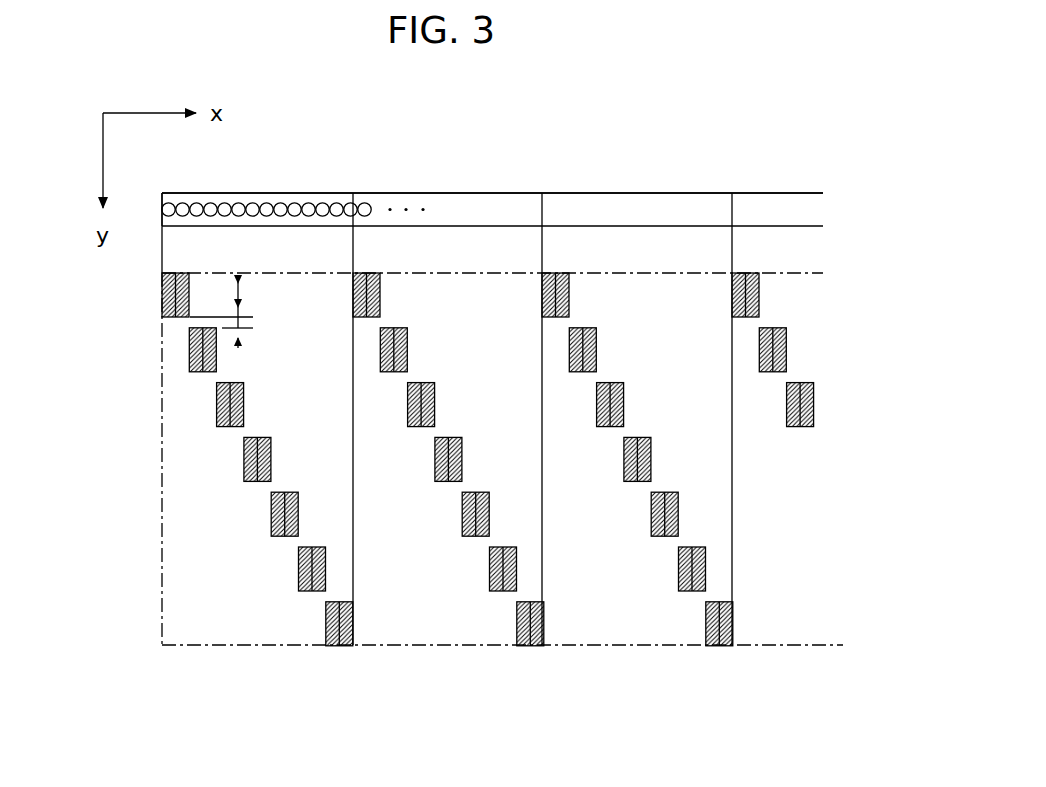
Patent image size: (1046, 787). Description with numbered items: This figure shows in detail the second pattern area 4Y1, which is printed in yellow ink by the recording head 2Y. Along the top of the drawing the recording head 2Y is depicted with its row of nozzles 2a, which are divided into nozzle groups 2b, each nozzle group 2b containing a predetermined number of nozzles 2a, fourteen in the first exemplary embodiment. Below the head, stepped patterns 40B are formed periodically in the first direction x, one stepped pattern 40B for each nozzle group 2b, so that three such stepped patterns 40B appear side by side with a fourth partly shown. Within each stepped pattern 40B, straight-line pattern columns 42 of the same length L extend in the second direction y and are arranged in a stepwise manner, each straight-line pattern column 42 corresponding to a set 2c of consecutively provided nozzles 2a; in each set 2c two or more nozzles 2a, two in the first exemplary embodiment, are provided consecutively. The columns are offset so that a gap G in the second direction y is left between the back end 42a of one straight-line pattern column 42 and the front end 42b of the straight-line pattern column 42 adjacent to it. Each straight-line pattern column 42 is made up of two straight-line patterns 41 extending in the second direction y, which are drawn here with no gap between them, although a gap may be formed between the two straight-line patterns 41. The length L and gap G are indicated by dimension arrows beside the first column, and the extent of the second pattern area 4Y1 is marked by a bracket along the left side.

The recording head 2Y is at (492, 373).
The nozzles 2a is at (250, 204).
The nozzle groups 2b is at (305, 193).
The sets of consecutively provided nozzles 2c is at (190, 186).
The straight-line patterns 41 is at (165, 290).
The straight-line pattern columns 42 is at (457, 454).
The back end of straight-line pattern column 42a is at (184, 322).
The front end of straight-line pattern column 42b is at (189, 324).
The stepped pattern 40B is at (457, 505).
The second pattern area 4Y1 is at (438, 505).
The length of straight-line pattern column L is at (226, 296).
The gap G is at (249, 329).